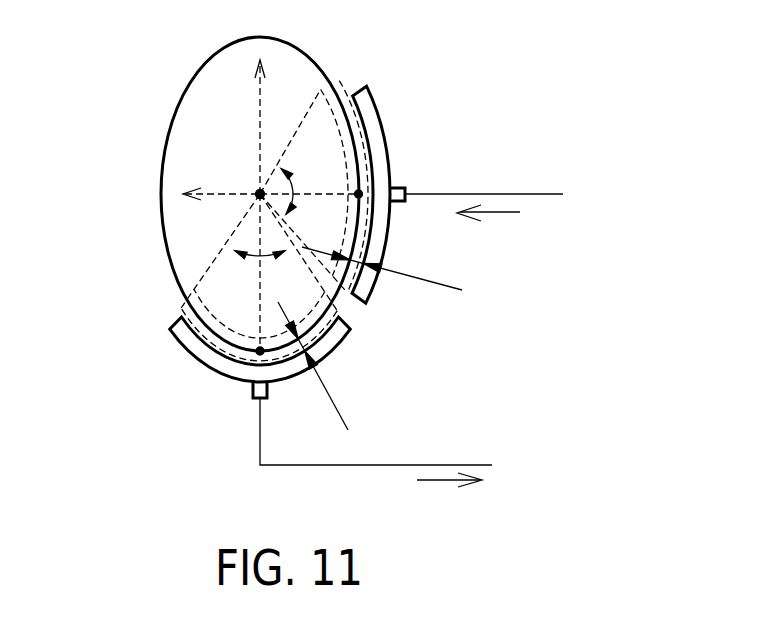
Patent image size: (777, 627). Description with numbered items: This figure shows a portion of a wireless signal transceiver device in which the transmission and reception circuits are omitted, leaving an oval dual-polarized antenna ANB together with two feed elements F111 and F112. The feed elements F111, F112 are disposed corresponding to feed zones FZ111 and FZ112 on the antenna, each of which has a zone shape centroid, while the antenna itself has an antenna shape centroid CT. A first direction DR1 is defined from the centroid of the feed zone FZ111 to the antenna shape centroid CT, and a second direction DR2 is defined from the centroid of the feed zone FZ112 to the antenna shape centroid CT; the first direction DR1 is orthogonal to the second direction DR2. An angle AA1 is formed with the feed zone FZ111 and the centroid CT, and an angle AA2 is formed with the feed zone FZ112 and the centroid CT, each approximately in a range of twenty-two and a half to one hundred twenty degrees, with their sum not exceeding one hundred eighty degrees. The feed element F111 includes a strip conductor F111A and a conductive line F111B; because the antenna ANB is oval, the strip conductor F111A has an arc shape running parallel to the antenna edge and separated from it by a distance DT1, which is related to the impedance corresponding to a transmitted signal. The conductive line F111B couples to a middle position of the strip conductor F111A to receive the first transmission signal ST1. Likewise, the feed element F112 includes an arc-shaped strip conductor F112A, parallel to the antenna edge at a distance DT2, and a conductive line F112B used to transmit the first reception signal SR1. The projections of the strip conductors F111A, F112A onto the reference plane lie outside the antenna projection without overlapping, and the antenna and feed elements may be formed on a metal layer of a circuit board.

The dual-polarized antenna ANB is at (172, 127).
The antenna shape centroid CT is at (258, 196).
The first direction DR1 is at (218, 193).
The second direction DR2 is at (258, 111).
The angle AA1 is at (304, 191).
The angle AA2 is at (259, 252).
The feed zone FZ111 is at (337, 80).
The feed zone FZ112 is at (182, 309).
The feed element F111 is at (483, 194).
The strip conductor F111A is at (375, 122).
The conductive line F111B is at (400, 190).
The feed element F112 is at (258, 391).
The strip conductor F112A is at (227, 368).
The conductive line F112B is at (257, 398).
The first transmission signal ST1 is at (497, 227).
The first reception signal SR1 is at (441, 495).
The distance DT1 is at (387, 268).
The distance DT2 is at (336, 366).